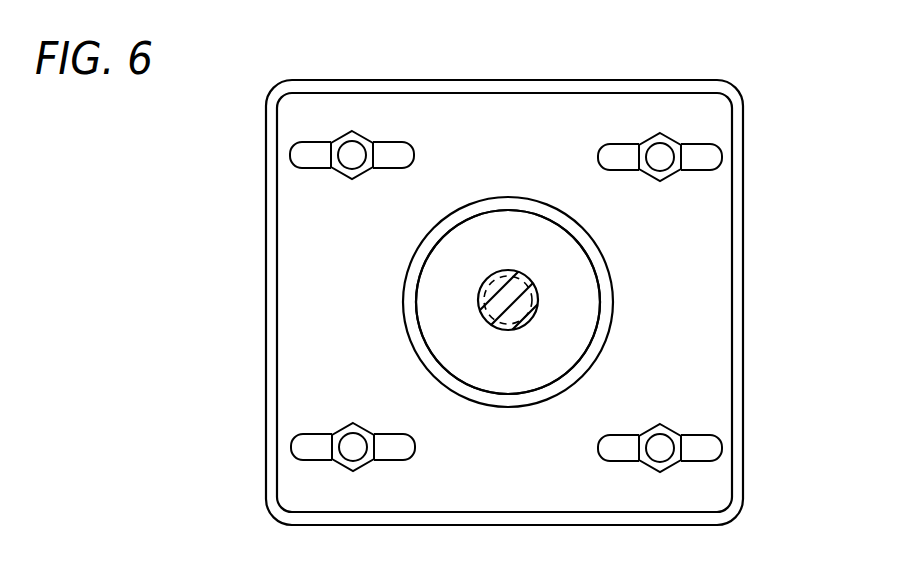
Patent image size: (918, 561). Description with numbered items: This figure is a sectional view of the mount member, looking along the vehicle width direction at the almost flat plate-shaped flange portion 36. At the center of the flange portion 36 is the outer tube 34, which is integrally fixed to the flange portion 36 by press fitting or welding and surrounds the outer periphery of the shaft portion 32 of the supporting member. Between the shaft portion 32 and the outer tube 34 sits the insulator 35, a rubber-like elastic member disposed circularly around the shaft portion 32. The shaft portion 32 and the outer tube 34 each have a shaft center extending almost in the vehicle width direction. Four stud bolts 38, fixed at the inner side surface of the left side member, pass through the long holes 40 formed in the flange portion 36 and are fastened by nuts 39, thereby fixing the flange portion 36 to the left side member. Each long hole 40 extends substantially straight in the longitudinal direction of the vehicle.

The shaft portion 32 is at (541, 283).
The outer tube 34 is at (510, 197).
The insulator 35 is at (437, 300).
The flange portion 36 is at (664, 80).
The stud bolt 38 is at (360, 140).
The nut 39 is at (357, 180).
The long hole 40 is at (405, 151).